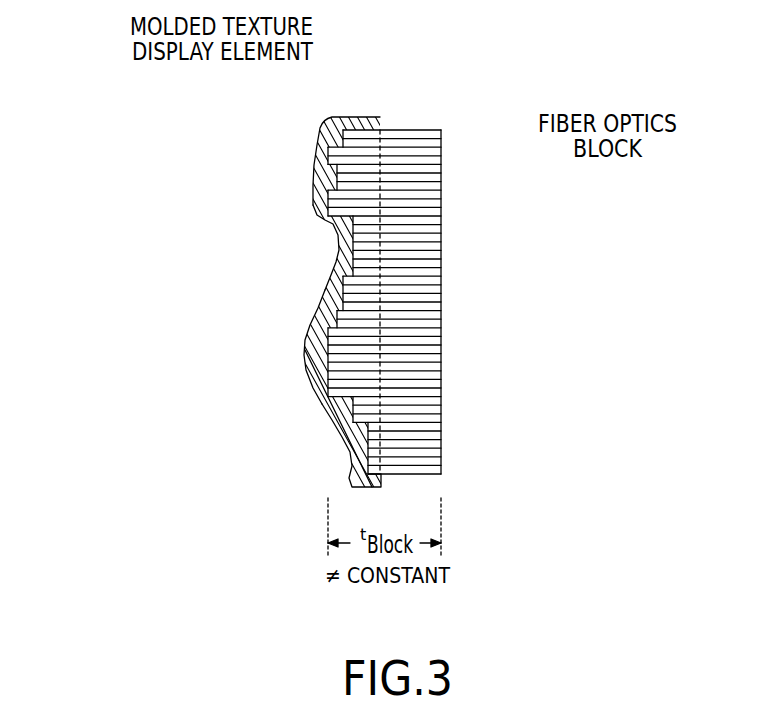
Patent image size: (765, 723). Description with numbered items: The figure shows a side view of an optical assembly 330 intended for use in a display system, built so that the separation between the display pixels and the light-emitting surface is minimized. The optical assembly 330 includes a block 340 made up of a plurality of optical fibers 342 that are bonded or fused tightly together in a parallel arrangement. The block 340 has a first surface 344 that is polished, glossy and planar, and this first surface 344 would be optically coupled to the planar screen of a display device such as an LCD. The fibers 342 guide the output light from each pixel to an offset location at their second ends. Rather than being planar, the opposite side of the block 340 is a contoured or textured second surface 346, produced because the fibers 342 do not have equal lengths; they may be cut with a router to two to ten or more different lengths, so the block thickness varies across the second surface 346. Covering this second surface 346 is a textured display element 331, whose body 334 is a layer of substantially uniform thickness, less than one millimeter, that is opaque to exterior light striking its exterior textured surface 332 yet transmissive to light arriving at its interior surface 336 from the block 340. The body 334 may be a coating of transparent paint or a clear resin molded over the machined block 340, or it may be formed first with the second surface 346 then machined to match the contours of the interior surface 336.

The optical assembly 330 is at (163, 250).
The textured display element 331 is at (327, 141).
The exterior textured surface 332 is at (307, 337).
The body 334 is at (353, 484).
The interior surface 336 is at (332, 356).
The second surface 346 is at (345, 241).
The block 340 is at (420, 128).
The optical fibers 342 is at (443, 264).
The first surface 344 is at (443, 228).